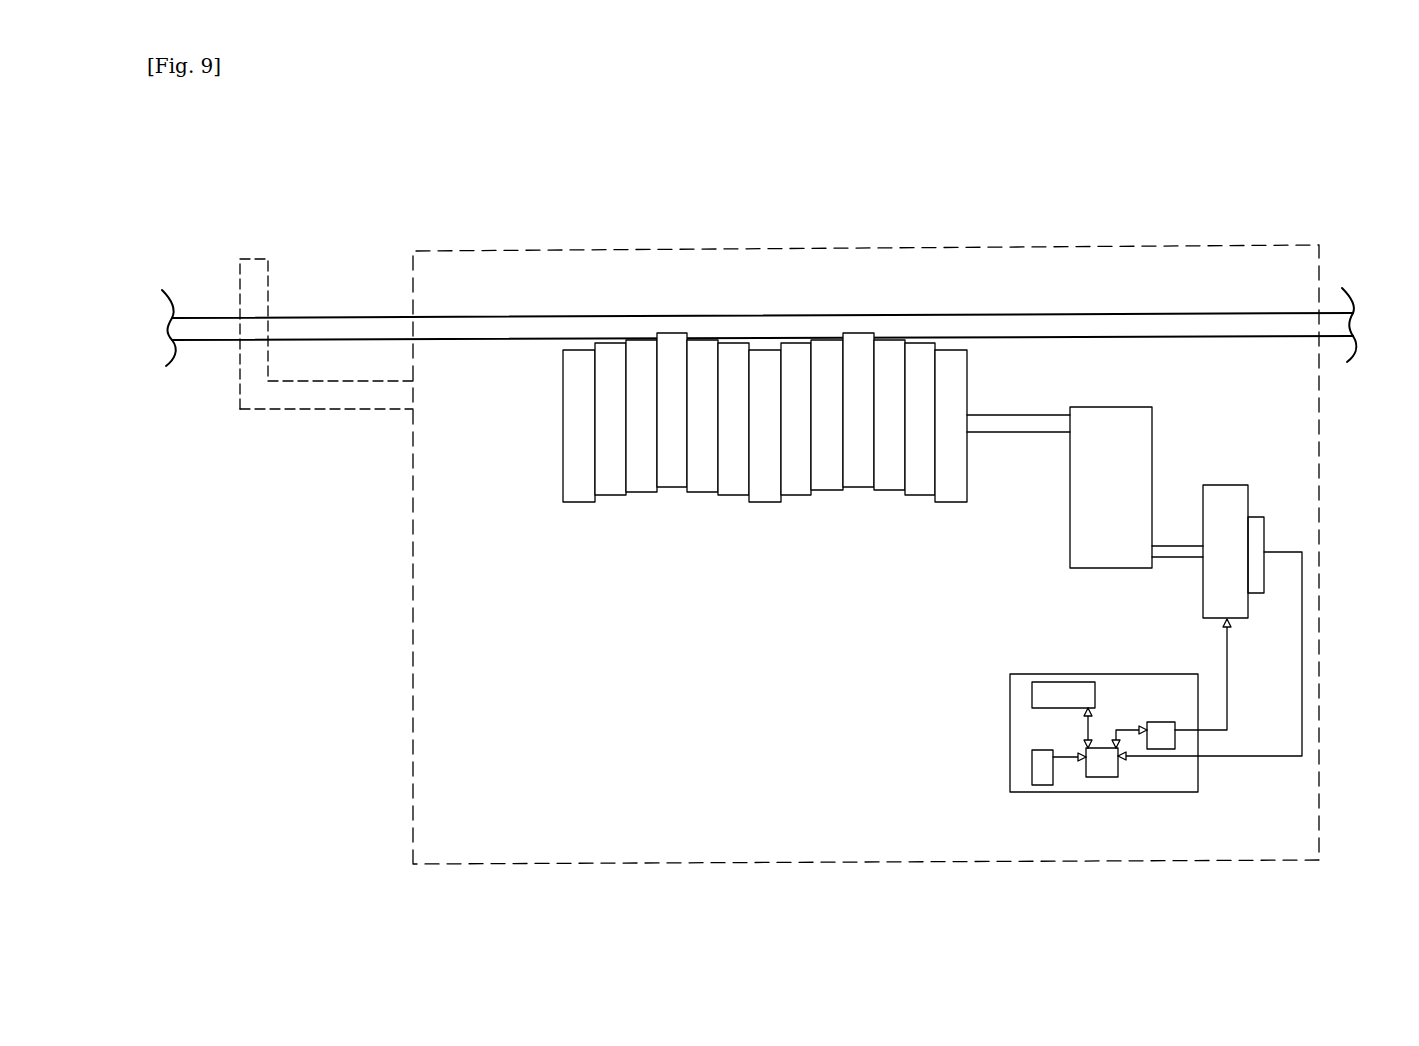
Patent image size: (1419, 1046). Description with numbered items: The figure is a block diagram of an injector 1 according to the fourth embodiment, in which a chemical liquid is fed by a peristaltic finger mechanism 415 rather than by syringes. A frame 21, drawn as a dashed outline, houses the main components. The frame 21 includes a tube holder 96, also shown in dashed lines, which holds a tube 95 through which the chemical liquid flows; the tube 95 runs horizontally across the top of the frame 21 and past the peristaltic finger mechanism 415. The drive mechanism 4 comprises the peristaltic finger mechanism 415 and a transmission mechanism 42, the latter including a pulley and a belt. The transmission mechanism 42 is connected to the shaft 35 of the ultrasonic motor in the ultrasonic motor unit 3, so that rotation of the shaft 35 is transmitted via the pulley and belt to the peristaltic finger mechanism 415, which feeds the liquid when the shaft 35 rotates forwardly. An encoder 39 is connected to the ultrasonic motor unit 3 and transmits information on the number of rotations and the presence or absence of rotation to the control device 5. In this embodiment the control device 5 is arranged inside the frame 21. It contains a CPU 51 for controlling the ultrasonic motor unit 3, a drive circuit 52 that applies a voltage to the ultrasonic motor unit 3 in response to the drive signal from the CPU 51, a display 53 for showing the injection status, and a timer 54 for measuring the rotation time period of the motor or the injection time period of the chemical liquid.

The injector 1 is at (378, 197).
The frame 21 is at (413, 678).
The tube 95 is at (505, 328).
The tube holder 96 is at (262, 405).
The drive mechanism 4 is at (803, 655).
The peristaltic finger mechanism 415 is at (827, 490).
The transmission mechanism 42 is at (1078, 544).
The shaft 35 is at (1185, 555).
The ultrasonic motor unit 3 is at (1207, 488).
The encoder 39 is at (1254, 520).
The control device 5 is at (1020, 795).
The CPU 51 is at (1105, 778).
The drive circuit 52 is at (1152, 722).
The display 53 is at (1037, 708).
The timer 54 is at (1057, 790).